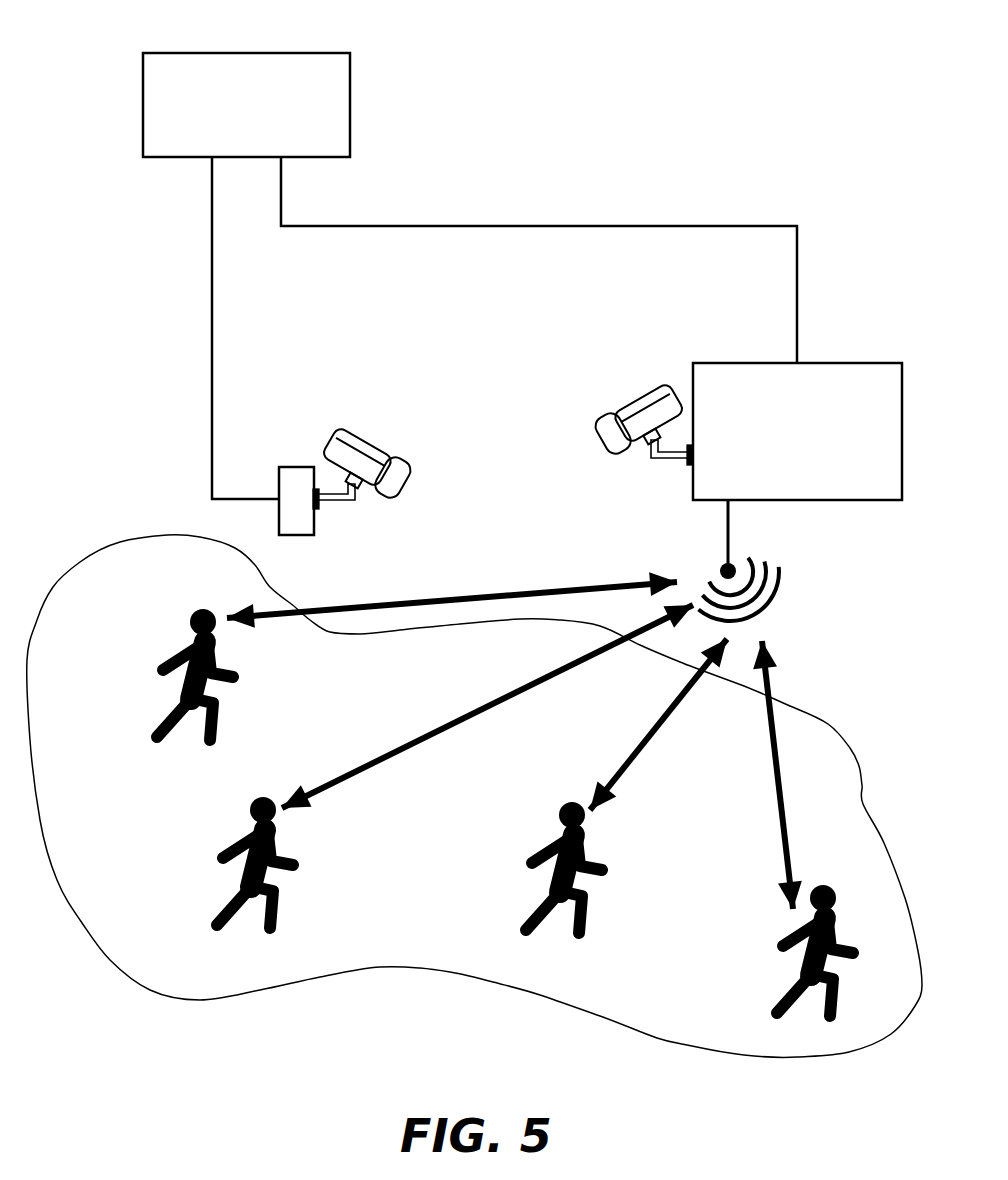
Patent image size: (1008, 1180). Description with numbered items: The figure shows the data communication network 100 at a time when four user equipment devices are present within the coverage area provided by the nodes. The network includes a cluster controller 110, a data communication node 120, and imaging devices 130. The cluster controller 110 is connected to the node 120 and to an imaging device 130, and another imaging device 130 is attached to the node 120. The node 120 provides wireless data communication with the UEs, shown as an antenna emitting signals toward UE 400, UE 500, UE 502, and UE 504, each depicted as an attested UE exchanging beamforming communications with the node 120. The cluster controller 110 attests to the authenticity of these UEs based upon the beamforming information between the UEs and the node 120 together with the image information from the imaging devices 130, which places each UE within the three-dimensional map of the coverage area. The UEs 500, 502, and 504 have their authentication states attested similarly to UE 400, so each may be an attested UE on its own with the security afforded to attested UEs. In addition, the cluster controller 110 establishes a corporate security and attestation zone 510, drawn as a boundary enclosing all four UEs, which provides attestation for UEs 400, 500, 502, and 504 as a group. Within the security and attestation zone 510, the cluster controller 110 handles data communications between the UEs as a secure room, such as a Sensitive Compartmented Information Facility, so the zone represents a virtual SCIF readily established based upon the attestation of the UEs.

The data communication network 100 is at (464, 570).
The cluster controller 110 is at (153, 54).
The data communication node 120 is at (701, 365).
The imaging device 130 is at (378, 447).
The UE 400 is at (200, 610).
The UE 500 is at (259, 798).
The UE 502 is at (566, 803).
The UE 504 is at (829, 886).
The security and attestation zone 510 is at (154, 536).